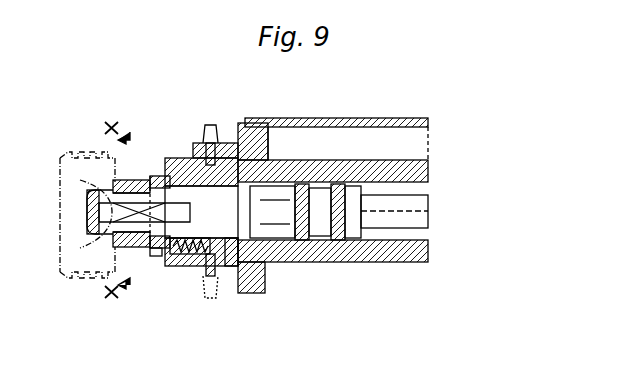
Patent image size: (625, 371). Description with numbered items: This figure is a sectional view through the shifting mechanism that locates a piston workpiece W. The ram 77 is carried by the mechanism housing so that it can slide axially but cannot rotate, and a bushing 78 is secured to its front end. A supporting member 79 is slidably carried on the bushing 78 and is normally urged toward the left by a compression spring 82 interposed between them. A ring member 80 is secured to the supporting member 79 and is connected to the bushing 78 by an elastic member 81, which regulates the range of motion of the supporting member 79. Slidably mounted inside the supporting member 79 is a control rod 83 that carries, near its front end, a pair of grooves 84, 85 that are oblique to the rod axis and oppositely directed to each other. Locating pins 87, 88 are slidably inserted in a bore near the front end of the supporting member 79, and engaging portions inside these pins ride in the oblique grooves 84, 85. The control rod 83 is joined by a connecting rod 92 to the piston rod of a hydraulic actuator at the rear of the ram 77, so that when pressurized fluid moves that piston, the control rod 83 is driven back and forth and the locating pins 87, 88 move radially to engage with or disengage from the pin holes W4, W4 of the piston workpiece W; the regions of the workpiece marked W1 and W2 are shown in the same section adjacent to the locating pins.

The ram 77 is at (330, 162).
The bushing 78 is at (236, 266).
The supporting member 79 is at (185, 256).
The ring member 80 is at (185, 158).
The elastic member 81 is at (212, 125).
The compression spring 82 is at (207, 282).
The control rod 83 is at (265, 262).
The groove 84 is at (151, 256).
The groove 85 is at (158, 176).
The locating pin 87 is at (137, 180).
The locating pin 88 is at (112, 240).
The connecting rod 92 is at (410, 214).
The piston workpiece W is at (58, 222).
The workpiece upper portion W1 is at (60, 196).
The workpiece lower portion W2 is at (60, 266).
The pin hole W4 is at (112, 170).